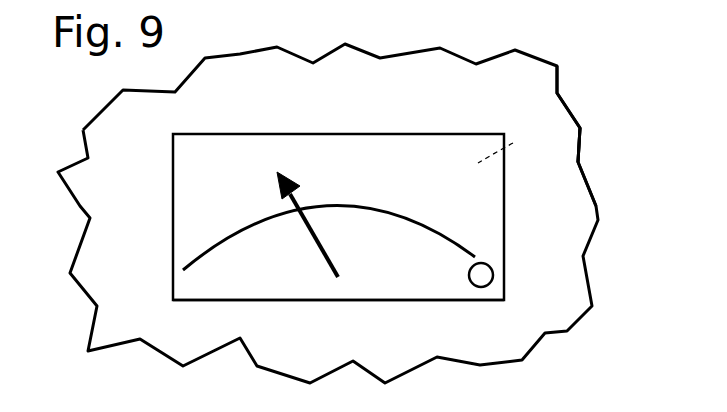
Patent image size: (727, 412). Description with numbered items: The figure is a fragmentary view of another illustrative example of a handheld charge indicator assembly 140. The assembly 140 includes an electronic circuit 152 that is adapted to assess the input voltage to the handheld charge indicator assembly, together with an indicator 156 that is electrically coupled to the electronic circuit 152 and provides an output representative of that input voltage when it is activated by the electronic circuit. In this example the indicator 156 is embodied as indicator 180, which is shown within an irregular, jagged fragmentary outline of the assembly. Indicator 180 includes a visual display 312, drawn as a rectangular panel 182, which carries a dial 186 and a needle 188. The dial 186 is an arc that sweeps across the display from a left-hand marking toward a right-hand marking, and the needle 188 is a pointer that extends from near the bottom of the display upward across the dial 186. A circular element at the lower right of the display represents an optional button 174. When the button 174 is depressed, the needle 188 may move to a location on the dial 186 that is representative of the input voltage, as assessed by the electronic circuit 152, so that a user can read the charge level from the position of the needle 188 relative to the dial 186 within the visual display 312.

The handheld charge indicator assembly 140 is at (606, 69).
The indicator 156 is at (622, 105).
The indicator 180 is at (568, 185).
The gauge display panel 182 is at (188, 165).
The electronic circuit 152 is at (518, 147).
The dial 186 is at (347, 222).
The needle 188 is at (298, 196).
The button 174 is at (470, 271).
The visual display 312 is at (351, 302).